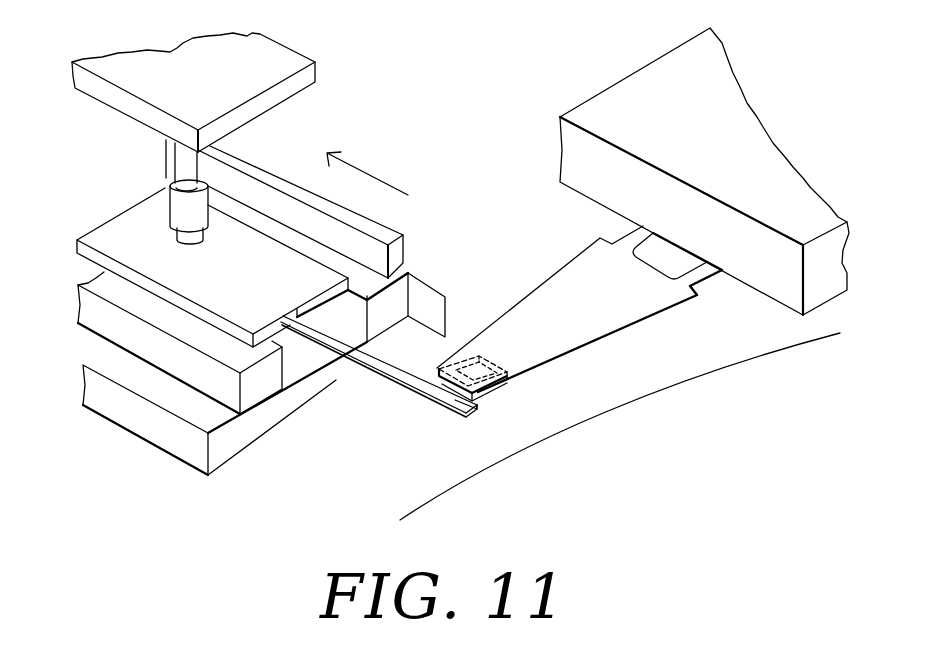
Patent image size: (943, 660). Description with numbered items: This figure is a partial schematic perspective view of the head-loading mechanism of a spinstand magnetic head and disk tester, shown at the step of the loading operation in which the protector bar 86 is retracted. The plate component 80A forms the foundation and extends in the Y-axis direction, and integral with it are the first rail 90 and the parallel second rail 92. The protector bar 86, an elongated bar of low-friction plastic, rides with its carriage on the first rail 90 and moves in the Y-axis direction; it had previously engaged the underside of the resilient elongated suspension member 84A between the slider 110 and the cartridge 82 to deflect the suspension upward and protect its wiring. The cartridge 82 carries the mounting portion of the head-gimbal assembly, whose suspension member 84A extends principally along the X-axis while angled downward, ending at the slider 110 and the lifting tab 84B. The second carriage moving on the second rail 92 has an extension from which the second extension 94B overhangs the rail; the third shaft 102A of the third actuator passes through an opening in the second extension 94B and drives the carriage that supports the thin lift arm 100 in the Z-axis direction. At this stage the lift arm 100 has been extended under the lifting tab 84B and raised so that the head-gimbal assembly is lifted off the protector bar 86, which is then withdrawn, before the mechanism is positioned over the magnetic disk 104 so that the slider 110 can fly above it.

The second extension 94B is at (308, 75).
The third shaft 102A is at (183, 155).
The protector bar 86 is at (378, 232).
The first rail 90 is at (400, 295).
The second rail 92 is at (257, 397).
The plate component 80A is at (150, 417).
The lift arm 100 is at (408, 378).
The lifting tab 84B is at (435, 400).
The slider 110 is at (485, 400).
The resilient elongated suspension member 84A is at (576, 278).
The cartridge 82 is at (580, 150).
The magnetic disk 104 is at (480, 497).